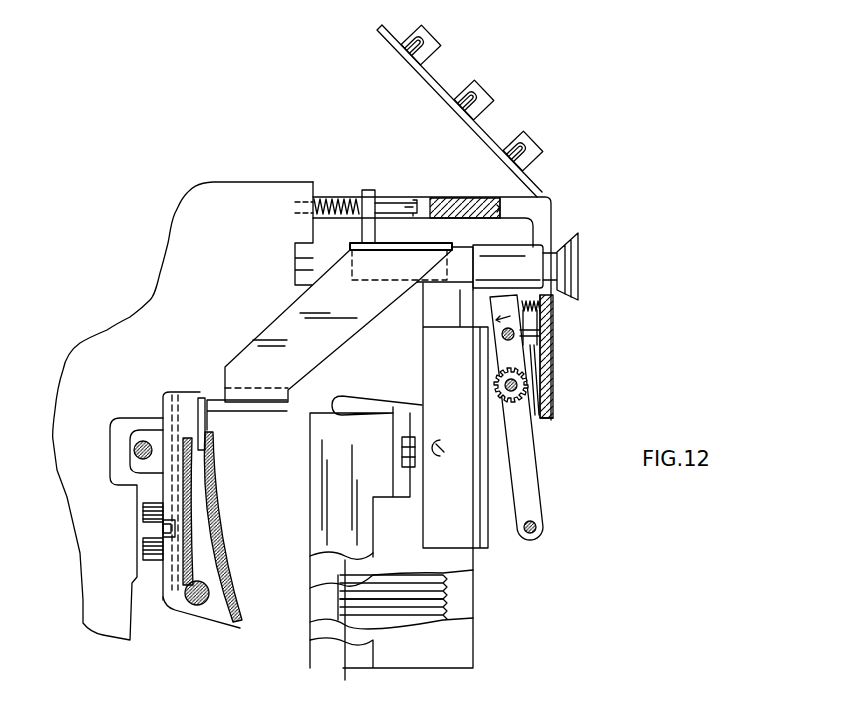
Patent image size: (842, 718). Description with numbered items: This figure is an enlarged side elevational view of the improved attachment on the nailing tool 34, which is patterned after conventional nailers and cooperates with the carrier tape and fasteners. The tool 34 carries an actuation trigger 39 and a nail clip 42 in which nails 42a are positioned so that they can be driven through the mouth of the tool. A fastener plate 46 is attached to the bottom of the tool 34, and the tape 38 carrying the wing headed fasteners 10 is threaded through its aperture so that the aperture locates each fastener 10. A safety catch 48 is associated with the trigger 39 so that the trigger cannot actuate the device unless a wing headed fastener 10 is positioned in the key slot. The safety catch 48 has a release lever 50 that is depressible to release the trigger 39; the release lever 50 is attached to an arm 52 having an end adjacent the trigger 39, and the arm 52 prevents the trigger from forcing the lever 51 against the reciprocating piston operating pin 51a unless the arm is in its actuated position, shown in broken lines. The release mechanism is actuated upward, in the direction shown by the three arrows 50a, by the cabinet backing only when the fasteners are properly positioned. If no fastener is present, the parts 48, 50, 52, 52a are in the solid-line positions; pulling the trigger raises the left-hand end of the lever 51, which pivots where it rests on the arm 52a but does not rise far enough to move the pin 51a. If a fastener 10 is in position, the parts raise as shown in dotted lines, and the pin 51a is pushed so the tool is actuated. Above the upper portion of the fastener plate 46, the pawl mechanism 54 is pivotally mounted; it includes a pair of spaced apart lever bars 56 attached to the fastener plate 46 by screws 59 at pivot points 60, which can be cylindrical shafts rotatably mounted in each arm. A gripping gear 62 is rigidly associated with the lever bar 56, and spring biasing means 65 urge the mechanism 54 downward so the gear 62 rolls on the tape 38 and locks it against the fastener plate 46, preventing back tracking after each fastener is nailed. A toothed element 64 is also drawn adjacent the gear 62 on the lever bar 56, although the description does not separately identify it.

The wing headed fastener 10 is at (437, 36).
The tape 38 is at (488, 138).
The nailing tool 34 is at (150, 328).
The fastener plate 46 is at (557, 343).
The safety catch 48 is at (517, 262).
The release lever 50 is at (580, 253).
The arrows 50a is at (328, 186).
The arm 52 is at (324, 357).
The arm 52a is at (230, 430).
The lever 51 is at (205, 490).
The reciprocating piston operating pin 51a is at (168, 528).
The actuation trigger 39 is at (222, 553).
The pawl mechanism 54 is at (522, 488).
The lever bars 56 is at (543, 523).
The screws 59 is at (538, 328).
The pivot points 60 is at (513, 340).
The gear 62 is at (533, 390).
The ratchet wheel 64 is at (497, 379).
The spring biasing means 65 is at (542, 315).
The nail clip 42 is at (443, 596).
The nails 42a is at (425, 612).